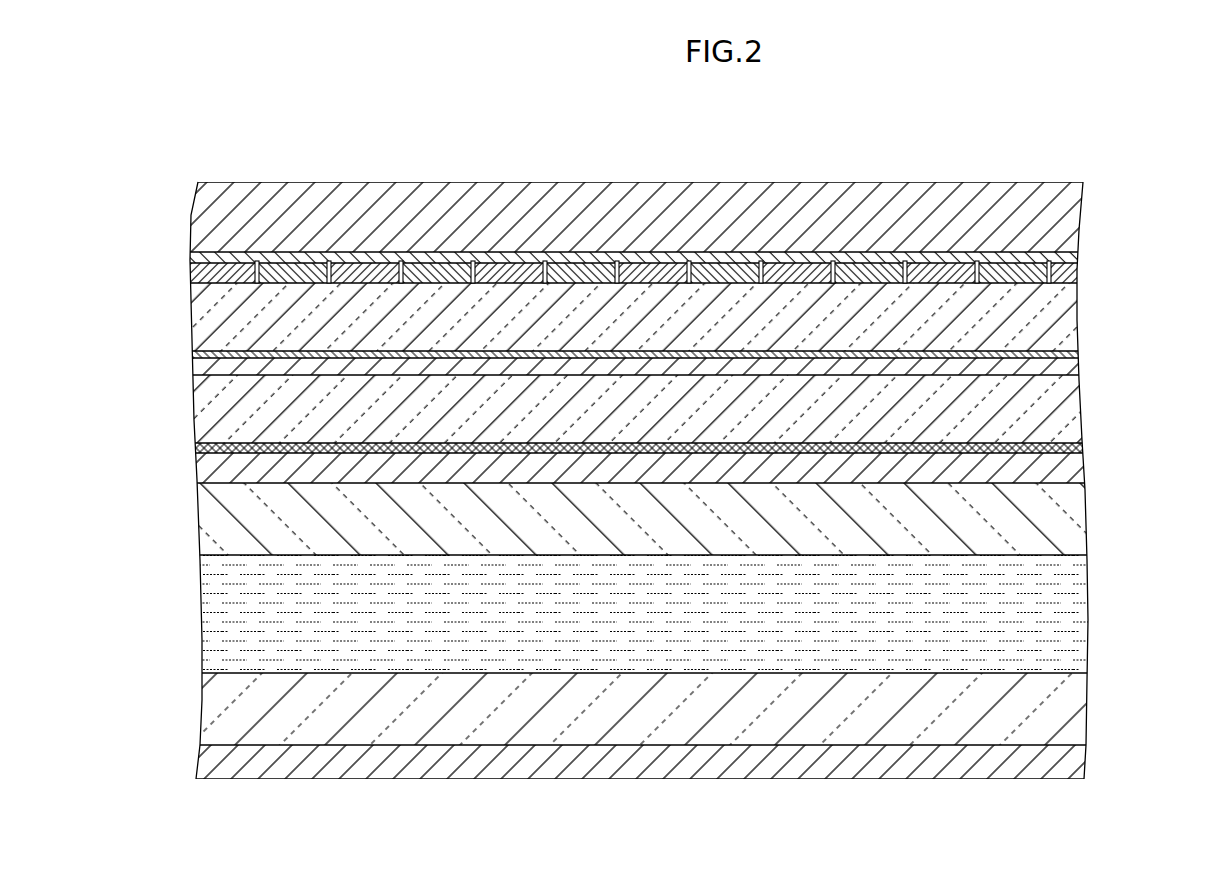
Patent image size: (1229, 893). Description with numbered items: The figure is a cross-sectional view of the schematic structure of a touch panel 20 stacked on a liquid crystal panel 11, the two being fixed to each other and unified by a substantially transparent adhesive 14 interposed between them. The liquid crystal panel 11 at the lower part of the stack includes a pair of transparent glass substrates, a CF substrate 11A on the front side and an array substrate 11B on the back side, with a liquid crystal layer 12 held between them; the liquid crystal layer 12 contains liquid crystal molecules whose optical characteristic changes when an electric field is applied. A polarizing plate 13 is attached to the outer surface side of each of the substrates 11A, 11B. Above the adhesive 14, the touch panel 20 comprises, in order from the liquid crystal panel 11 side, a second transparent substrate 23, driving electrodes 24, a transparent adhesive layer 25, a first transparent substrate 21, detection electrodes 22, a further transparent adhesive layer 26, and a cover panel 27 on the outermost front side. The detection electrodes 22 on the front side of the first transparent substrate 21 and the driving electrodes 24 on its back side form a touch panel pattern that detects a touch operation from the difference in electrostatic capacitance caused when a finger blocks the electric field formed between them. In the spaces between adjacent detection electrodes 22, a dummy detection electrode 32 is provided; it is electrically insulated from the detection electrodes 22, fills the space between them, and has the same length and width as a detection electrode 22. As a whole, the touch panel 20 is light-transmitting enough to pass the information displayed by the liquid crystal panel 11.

The liquid crystal panel 11 is at (1180, 783).
The CF substrate 11A is at (1080, 518).
The array substrate 11B is at (1080, 703).
The liquid crystal layer 12 is at (1080, 606).
The polarizing plate 13 is at (1080, 466).
The adhesive 14 is at (207, 446).
The touch panel 20 is at (1178, 156).
The first transparent substrate 21 is at (1078, 318).
The detection electrodes 22 is at (1078, 276).
The second transparent substrate 23 is at (1080, 420).
The driving electrodes 24 is at (1080, 368).
The transparent adhesive layer 25 is at (1078, 352).
The transparent adhesive layer 26 is at (1076, 254).
The cover panel 27 is at (1076, 207).
The dummy detection electrode 32 is at (1010, 272).